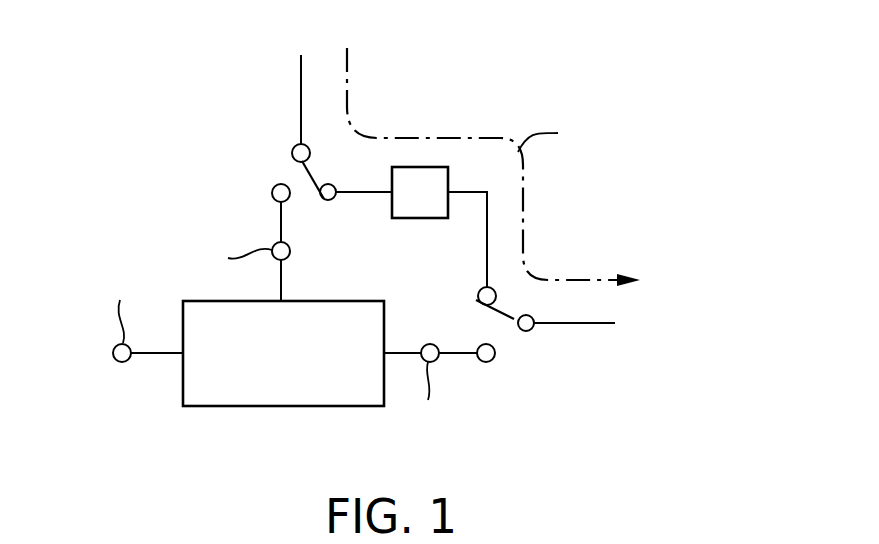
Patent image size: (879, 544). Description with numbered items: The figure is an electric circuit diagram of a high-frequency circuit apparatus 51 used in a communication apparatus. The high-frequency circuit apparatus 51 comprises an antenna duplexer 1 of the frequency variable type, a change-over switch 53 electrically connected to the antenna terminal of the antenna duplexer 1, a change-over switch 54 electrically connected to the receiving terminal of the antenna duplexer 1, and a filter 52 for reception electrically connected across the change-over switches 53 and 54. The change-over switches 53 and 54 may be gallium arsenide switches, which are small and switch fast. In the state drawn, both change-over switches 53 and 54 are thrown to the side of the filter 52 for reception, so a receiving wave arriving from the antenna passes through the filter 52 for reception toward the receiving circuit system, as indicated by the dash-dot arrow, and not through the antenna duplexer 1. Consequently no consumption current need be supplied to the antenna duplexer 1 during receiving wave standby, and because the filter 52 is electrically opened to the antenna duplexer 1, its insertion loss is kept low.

The antenna duplexer 1 is at (279, 395).
The high-frequency circuit apparatus 51 is at (118, 143).
The filter for reception 52 is at (415, 218).
The change-over switch 53 is at (312, 178).
The change-over switch 54 is at (505, 320).